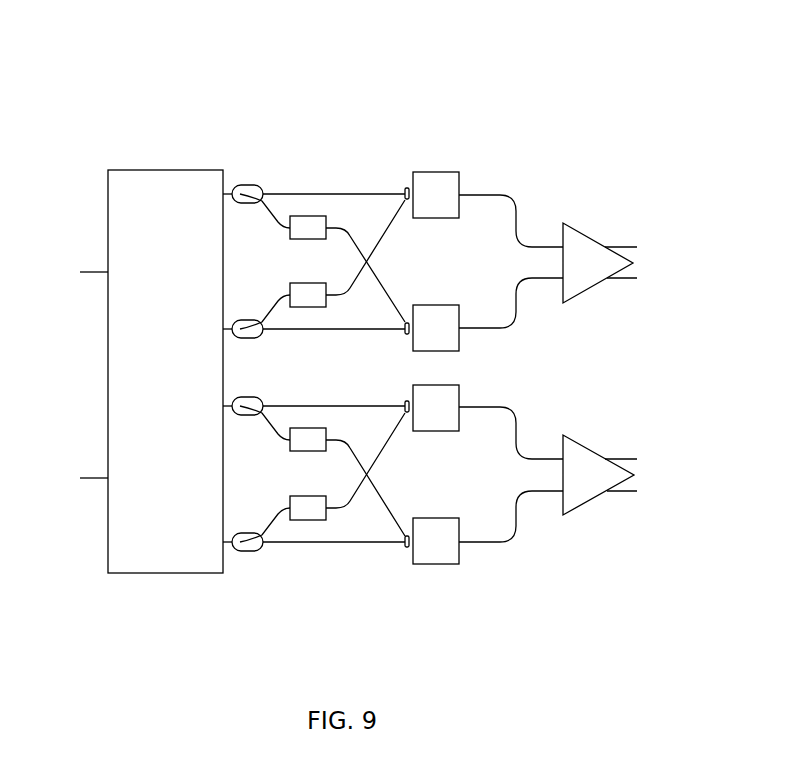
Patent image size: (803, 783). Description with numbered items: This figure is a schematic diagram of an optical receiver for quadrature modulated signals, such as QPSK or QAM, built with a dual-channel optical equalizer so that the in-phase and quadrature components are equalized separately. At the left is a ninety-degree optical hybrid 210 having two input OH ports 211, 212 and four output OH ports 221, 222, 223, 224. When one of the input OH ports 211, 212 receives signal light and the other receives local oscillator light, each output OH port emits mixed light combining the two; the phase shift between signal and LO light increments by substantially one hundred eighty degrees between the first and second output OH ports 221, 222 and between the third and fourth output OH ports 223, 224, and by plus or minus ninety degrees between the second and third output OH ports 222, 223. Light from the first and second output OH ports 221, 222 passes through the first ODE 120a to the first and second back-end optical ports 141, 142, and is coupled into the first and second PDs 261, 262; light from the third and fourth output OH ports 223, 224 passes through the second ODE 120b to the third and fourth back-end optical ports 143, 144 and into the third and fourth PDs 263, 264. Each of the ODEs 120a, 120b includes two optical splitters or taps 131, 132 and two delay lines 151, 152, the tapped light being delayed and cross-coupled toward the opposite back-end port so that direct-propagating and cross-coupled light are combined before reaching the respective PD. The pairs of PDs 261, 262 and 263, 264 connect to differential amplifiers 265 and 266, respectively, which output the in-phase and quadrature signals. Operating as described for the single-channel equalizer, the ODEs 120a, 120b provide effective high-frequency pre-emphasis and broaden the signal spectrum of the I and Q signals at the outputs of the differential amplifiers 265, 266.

The 90° optical hybrid 210 is at (158, 170).
The input OH port 211 is at (92, 272).
The input OH port 212 is at (92, 478).
The first output OH port 221 is at (225, 192).
The second output OH port 222 is at (225, 326).
The third output OH port 223 is at (225, 403).
The fourth output OH port 224 is at (226, 548).
The optical splitter or tap 131 is at (258, 188).
The optical splitter or tap 132 is at (258, 320).
The first back-end optical port 141 is at (405, 190).
The second back-end optical port 142 is at (405, 323).
The third back-end optical port 143 is at (405, 401).
The fourth back-end optical port 144 is at (405, 548).
The delay line 151 is at (311, 216).
The delay line 152 is at (304, 308).
The first PD 261 is at (443, 172).
The second PD 262 is at (430, 305).
The third PD 263 is at (442, 431).
The fourth PD 264 is at (438, 564).
The differential amplifier 265 is at (590, 238).
The differential amplifier 266 is at (592, 449).
The first ODE 120a is at (340, 140).
The second ODE 120b is at (333, 598).